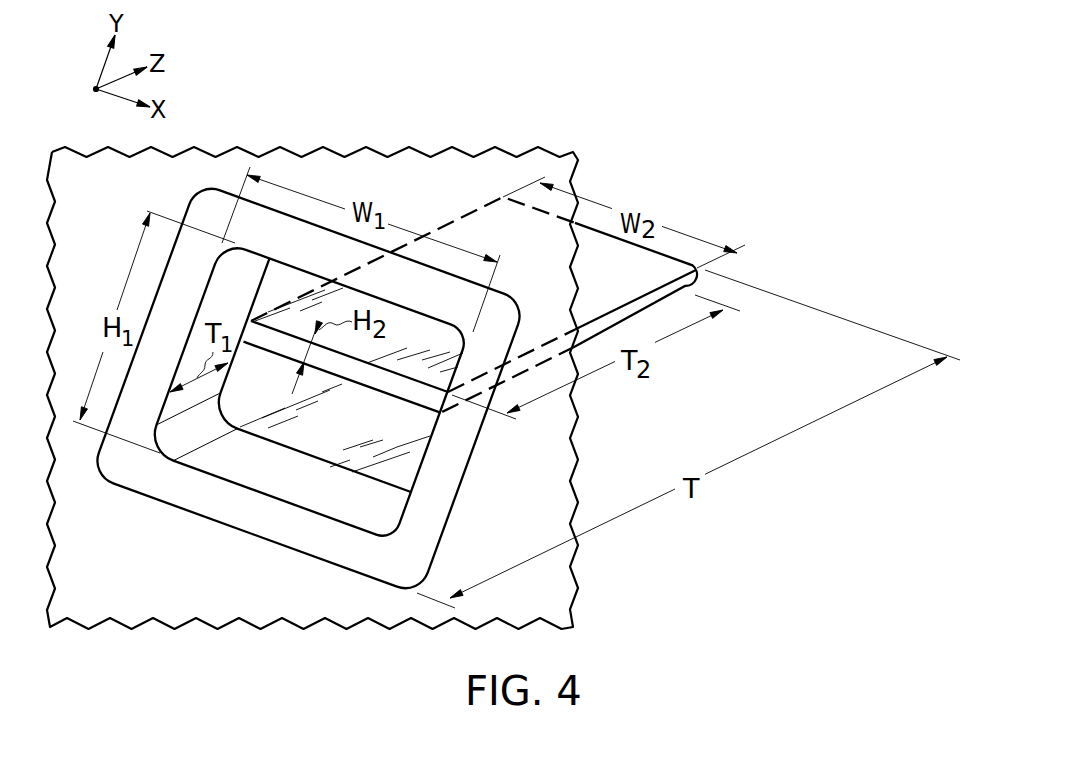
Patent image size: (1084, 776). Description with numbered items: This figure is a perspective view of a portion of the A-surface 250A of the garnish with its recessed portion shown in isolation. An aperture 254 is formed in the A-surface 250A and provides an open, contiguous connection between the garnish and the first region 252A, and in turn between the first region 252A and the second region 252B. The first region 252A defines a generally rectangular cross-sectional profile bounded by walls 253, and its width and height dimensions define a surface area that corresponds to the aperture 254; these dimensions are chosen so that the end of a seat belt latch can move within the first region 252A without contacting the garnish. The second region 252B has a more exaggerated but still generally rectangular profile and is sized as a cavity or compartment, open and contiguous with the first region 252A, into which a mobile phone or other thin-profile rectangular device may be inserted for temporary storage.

The A-surface 250A is at (158, 590).
The first region 252A is at (216, 311).
The second region 252B is at (597, 245).
The walls 253 is at (272, 477).
The aperture 254 is at (309, 423).